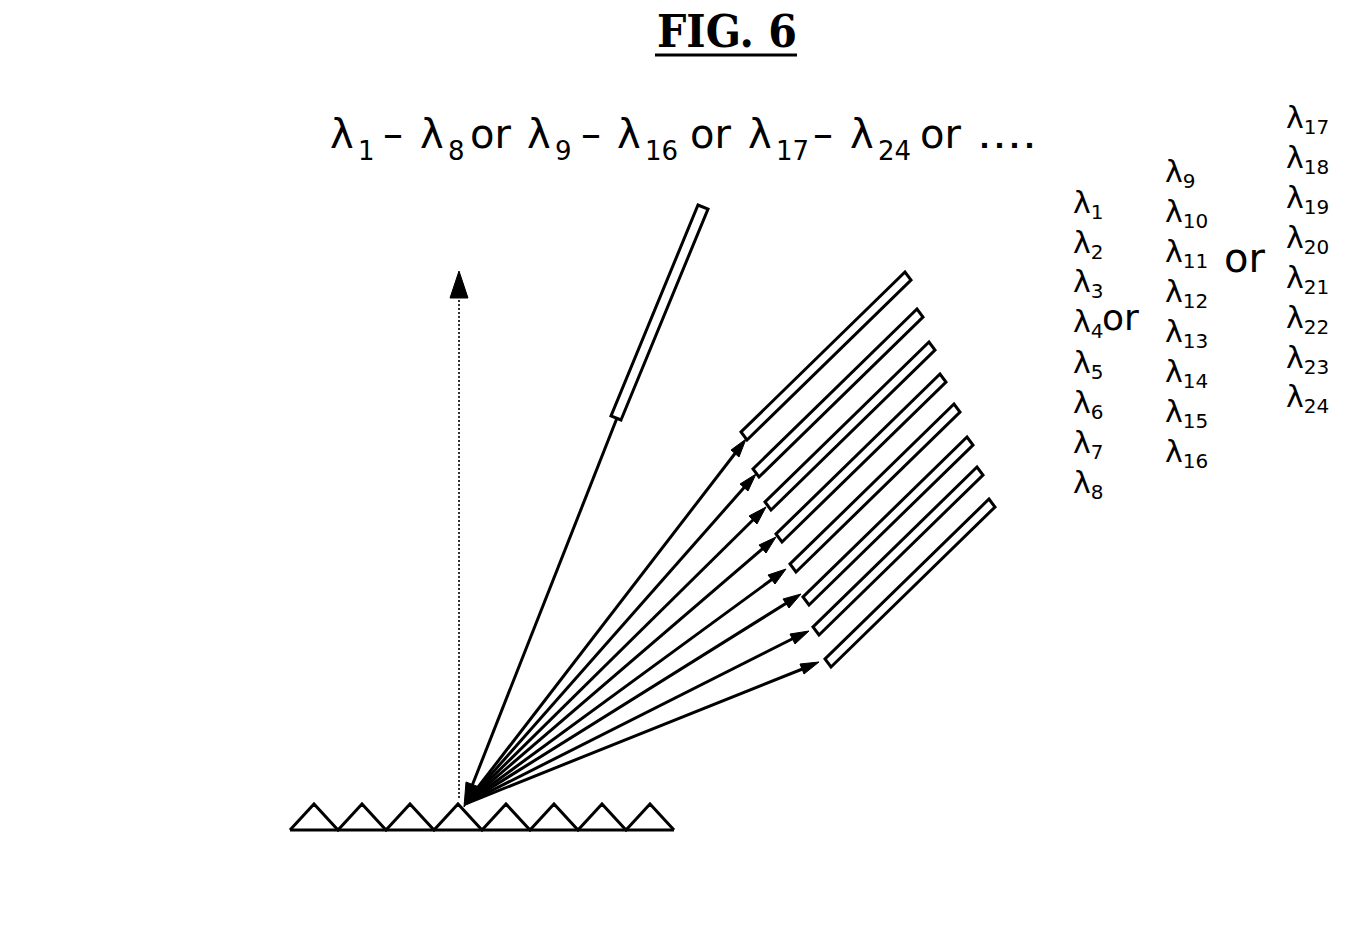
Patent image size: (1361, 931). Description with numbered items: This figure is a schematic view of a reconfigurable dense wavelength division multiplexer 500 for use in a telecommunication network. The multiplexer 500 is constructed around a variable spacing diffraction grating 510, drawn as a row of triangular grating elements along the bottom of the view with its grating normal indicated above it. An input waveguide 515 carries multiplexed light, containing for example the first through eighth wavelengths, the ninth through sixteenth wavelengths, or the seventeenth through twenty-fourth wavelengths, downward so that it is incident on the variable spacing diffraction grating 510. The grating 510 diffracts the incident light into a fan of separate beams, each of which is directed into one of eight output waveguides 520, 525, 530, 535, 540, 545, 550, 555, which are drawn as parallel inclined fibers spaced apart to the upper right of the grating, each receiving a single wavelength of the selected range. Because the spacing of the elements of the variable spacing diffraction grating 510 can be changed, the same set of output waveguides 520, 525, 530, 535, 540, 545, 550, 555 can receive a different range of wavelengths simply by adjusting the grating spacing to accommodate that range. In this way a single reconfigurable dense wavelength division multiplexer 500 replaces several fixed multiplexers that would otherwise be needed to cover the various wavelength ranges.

The reconfigurable dense wavelength division multiplexer 500 is at (380, 635).
The variable spacing diffraction grating 510 is at (660, 811).
The input optical fiber 515 is at (683, 272).
The waveguide 520 is at (918, 272).
The waveguide 525 is at (930, 306).
The waveguide 530 is at (942, 338).
The waveguide 535 is at (953, 370).
The waveguide 540 is at (968, 408).
The waveguide 545 is at (977, 440).
The waveguide 550 is at (988, 475).
The waveguide 555 is at (1000, 505).